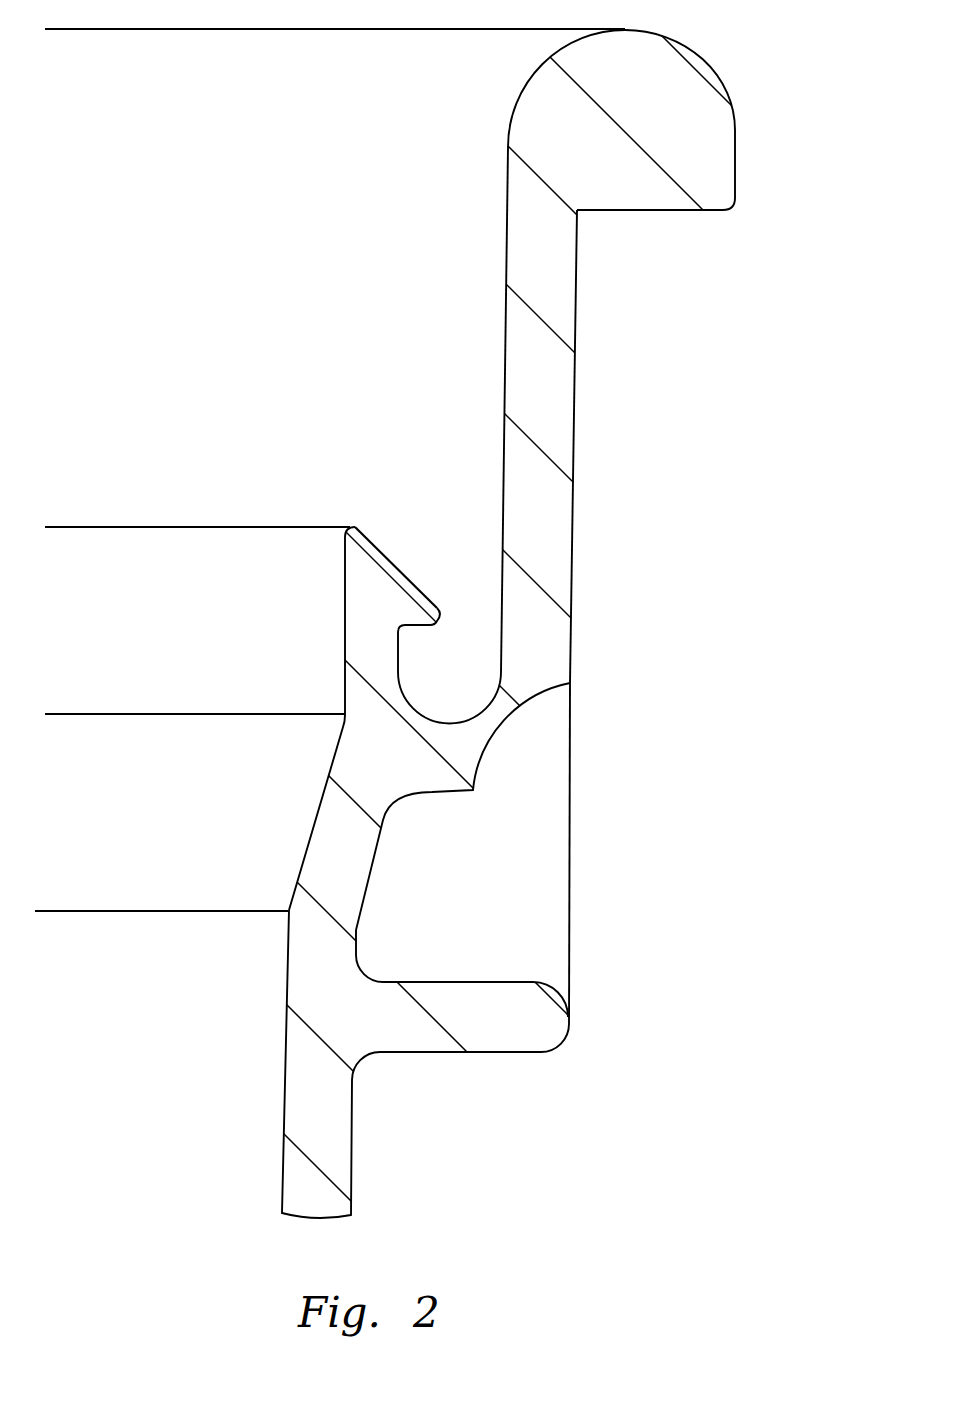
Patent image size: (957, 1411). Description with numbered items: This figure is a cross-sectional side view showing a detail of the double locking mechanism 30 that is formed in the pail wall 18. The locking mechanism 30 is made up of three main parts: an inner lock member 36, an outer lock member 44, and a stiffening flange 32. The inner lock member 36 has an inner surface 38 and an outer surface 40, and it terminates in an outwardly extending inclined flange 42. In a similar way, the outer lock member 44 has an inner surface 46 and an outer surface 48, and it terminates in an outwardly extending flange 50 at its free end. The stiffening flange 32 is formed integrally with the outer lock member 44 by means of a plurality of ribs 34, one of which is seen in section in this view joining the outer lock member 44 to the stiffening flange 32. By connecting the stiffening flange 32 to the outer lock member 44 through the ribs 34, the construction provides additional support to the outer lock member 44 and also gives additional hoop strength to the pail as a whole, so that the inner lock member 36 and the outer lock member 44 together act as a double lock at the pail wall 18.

The pail wall 18 is at (351, 1155).
The double locking mechanism 30 is at (478, 705).
The stiffening flange 32 is at (512, 1053).
The ribs 34 is at (571, 879).
The inner lock member 36 is at (427, 672).
The inner surface 38 is at (345, 599).
The outer surface 40 is at (452, 620).
The outwardly extending inclined flange 42 is at (383, 547).
The outer lock member 44 is at (557, 397).
The inner surface 46 is at (507, 253).
The outer surface 48 is at (574, 330).
The outwardly extending flange 50 is at (698, 58).